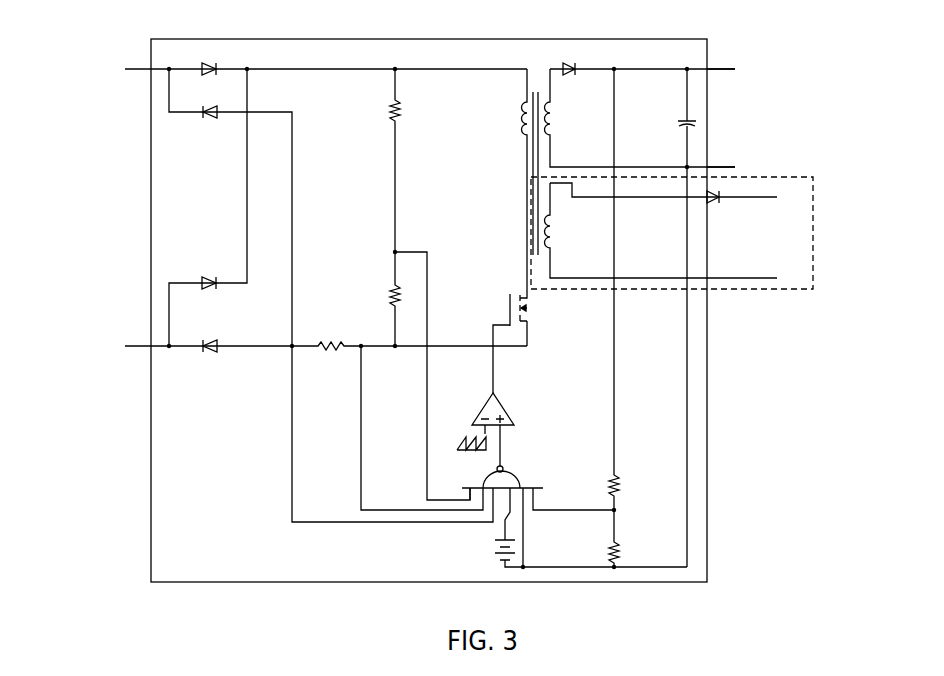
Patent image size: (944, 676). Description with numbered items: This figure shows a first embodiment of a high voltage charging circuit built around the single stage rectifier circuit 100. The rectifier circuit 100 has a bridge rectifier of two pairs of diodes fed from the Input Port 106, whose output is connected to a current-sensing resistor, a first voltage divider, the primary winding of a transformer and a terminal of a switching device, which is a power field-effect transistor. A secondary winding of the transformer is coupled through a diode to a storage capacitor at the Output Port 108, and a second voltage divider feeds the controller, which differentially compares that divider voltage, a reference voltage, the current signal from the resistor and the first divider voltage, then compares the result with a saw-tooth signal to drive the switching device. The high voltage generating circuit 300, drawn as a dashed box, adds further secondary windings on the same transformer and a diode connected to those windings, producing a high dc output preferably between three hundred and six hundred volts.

The single stage rectifier circuit 100 is at (140, 513).
The input port 106 is at (88, 193).
The output port 108 is at (770, 117).
The high voltage generating circuit 300 is at (834, 180).